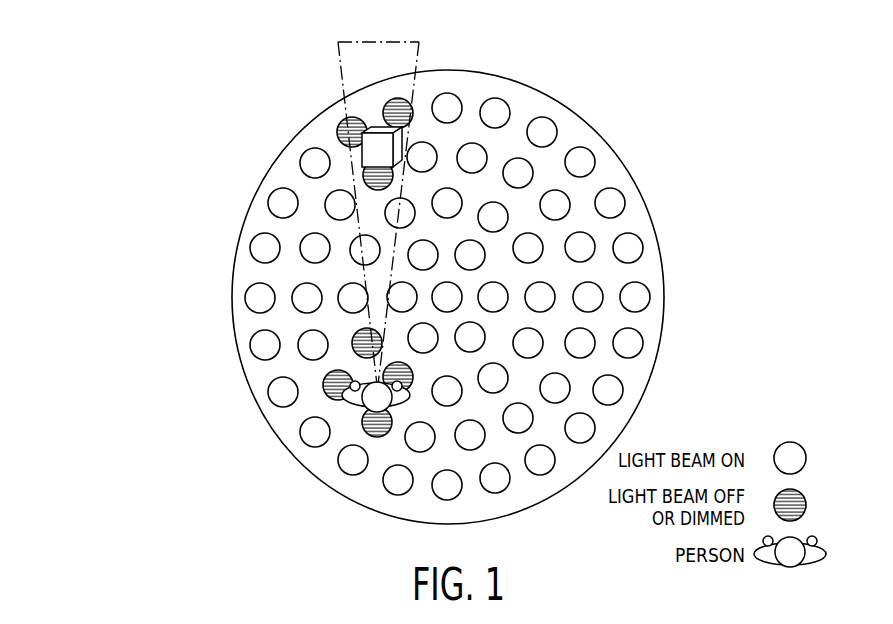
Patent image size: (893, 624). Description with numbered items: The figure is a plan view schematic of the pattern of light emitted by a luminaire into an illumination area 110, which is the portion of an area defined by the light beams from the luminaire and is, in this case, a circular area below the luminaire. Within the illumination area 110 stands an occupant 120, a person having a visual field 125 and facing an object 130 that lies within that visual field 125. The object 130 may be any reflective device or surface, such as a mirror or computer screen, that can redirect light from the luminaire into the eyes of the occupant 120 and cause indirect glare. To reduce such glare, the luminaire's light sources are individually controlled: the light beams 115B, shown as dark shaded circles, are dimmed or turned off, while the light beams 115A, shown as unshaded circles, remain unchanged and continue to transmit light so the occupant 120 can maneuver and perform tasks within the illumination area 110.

The illumination area 110 is at (231, 285).
The light beam 115A is at (268, 203).
The light beam 115B is at (346, 398).
The occupant 120 is at (362, 393).
The visual field 125 is at (610, 66).
The object 130 is at (373, 146).